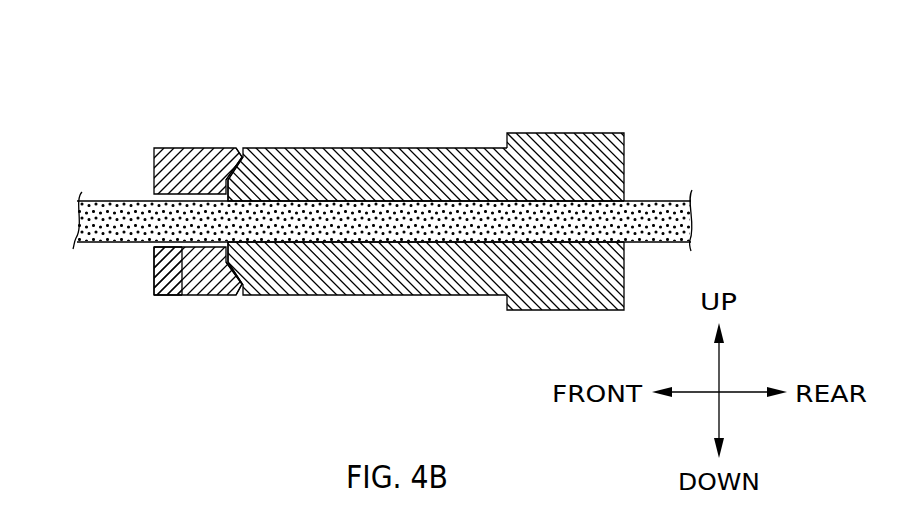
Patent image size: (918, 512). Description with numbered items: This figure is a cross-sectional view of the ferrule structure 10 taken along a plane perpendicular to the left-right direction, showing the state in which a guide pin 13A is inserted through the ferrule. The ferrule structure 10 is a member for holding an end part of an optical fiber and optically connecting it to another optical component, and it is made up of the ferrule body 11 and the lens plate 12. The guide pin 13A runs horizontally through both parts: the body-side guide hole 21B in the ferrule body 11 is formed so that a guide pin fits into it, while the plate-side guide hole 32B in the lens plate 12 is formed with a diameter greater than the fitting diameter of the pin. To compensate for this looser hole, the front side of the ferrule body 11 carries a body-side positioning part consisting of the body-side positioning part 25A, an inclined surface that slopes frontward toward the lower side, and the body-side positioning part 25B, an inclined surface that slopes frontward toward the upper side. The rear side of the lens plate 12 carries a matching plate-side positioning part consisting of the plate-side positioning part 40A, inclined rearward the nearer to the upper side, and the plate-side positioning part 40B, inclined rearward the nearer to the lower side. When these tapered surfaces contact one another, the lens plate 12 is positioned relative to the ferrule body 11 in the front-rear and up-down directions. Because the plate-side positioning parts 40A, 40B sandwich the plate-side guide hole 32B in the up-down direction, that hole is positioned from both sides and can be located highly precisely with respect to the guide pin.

The ferrule structure 10 is at (333, 72).
The ferrule body 11 is at (371, 147).
The lens plate 12 is at (181, 148).
The guide pin 13A is at (443, 222).
The body-side guide hole 21B is at (561, 201).
The body-side positioning part 25A is at (246, 152).
The body-side positioning part 25B is at (245, 292).
The plate-side guide hole 32B is at (170, 295).
The plate-side positioning part 40A is at (231, 148).
The plate-side positioning part 40B is at (232, 295).